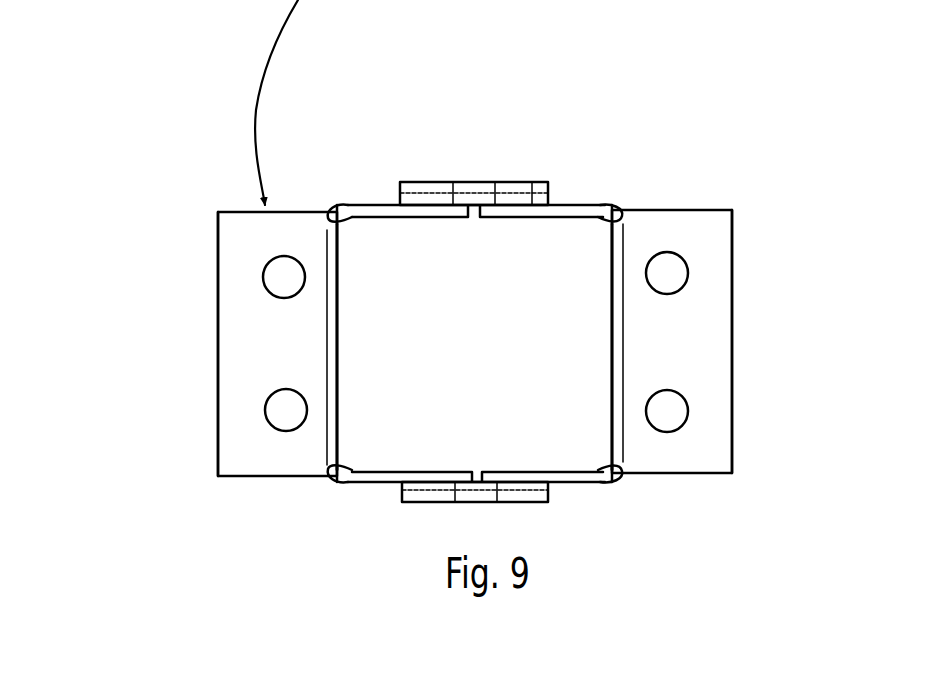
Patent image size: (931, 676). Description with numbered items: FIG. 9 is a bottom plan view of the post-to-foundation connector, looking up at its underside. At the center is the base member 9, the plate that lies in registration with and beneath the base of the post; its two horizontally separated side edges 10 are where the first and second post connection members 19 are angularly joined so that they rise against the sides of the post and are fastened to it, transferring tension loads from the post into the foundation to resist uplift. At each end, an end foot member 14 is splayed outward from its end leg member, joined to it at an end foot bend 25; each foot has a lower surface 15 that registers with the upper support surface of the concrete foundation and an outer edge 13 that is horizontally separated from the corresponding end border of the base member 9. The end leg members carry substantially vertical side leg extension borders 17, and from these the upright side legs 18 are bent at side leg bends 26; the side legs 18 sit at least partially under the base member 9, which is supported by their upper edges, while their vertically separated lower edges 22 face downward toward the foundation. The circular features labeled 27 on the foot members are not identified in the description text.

The base member 9 is at (565, 240).
The first and second side edges 10 is at (350, 207).
The outer edge 13 is at (220, 402).
The end foot member 14 is at (710, 237).
The lower surface 15 is at (228, 264).
The side leg extension border 17 is at (335, 207).
The side leg 18 is at (426, 197).
The post connection member 19 is at (413, 180).
The lower edge 22 is at (410, 207).
The end foot bend 25 is at (333, 313).
The side leg bend 26 is at (338, 207).
The holes 27 is at (263, 278).